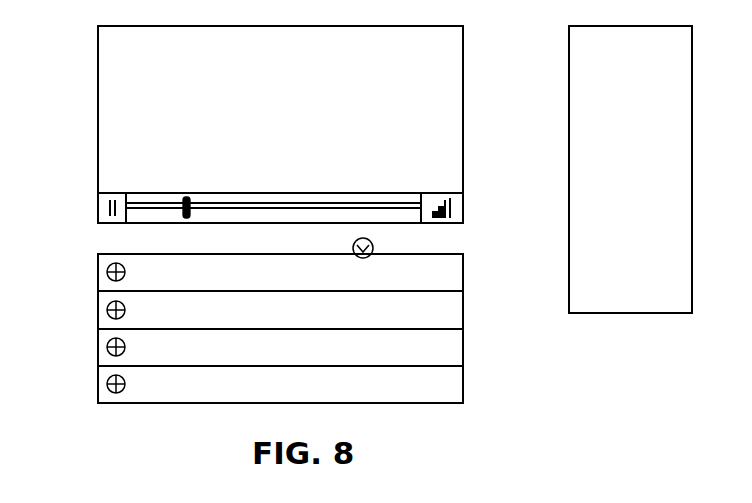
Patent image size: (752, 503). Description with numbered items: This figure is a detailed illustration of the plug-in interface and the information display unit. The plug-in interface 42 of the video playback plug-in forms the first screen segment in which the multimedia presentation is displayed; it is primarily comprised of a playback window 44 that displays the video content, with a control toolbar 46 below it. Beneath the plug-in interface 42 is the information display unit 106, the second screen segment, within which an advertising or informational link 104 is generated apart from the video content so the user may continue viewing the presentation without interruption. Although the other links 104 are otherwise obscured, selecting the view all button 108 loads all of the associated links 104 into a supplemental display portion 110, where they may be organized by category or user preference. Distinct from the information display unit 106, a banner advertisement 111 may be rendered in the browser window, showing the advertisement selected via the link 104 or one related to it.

The plug-in interface 42 is at (465, 150).
The playback window 44 is at (280, 109).
The control toolbar 46 is at (98, 200).
The link 104 is at (193, 262).
The information display unit 106 is at (465, 262).
The view all button 108 is at (374, 245).
The supplemental display portion 110 is at (473, 291).
The banner advertisement 111 is at (631, 313).